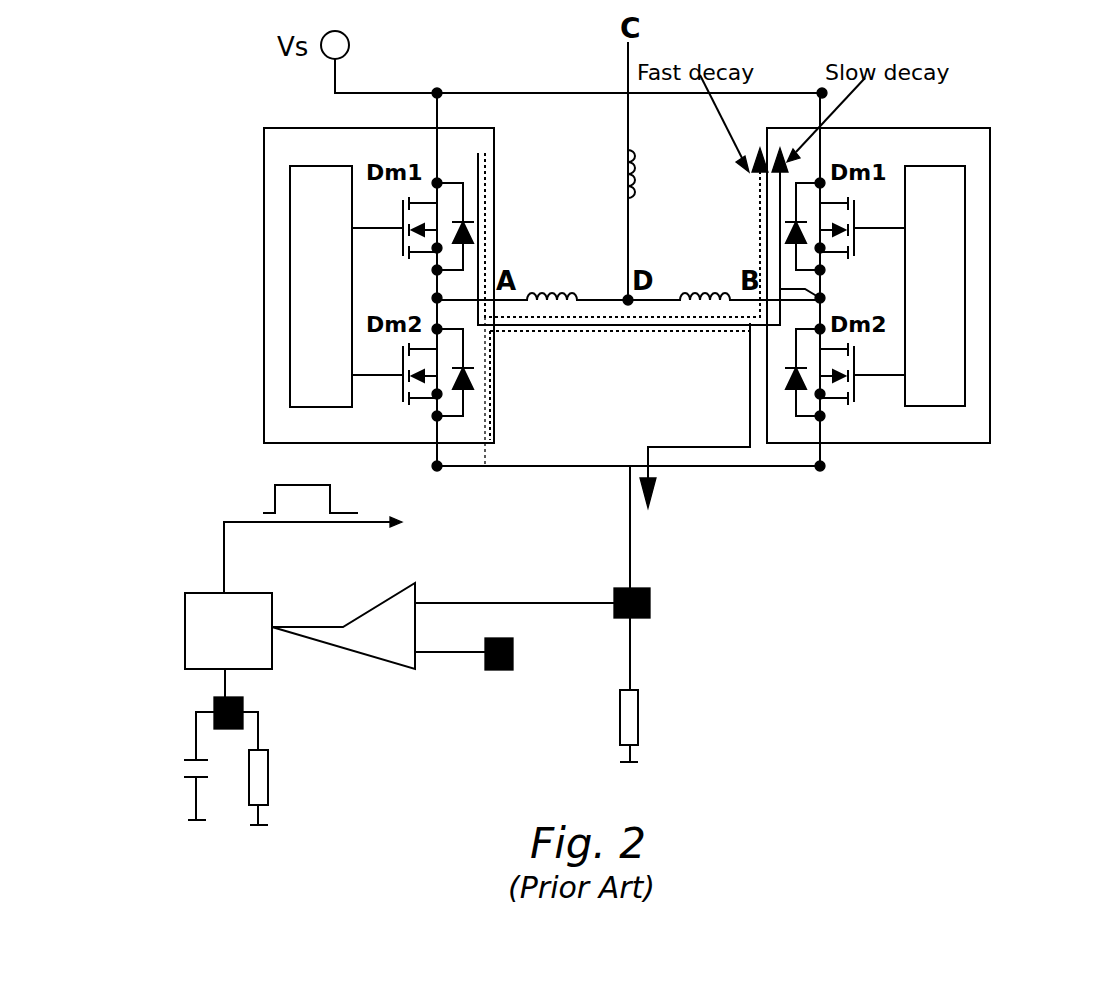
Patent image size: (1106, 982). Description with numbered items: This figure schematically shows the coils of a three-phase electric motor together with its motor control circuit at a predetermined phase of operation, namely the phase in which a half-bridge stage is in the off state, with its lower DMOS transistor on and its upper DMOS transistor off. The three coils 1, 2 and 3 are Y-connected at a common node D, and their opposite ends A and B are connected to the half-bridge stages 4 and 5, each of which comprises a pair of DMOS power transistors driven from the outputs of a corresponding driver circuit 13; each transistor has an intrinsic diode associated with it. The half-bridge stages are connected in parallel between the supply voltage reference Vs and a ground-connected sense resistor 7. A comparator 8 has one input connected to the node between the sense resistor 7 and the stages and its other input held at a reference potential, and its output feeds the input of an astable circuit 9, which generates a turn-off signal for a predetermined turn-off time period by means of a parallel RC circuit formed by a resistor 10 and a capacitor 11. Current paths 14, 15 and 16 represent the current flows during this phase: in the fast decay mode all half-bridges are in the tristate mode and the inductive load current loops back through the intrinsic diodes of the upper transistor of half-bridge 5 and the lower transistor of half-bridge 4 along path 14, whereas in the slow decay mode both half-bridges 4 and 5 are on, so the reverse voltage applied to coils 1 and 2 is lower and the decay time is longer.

The coil 1 is at (547, 292).
The coil 2 is at (709, 292).
The coil 3 is at (612, 168).
The half-bridge stage 4 is at (264, 428).
The half-bridge stage 5 is at (990, 425).
The sense resistor 7 is at (645, 718).
The comparator 8 is at (368, 616).
The astable circuit 9 is at (186, 600).
The resistor 10 is at (270, 800).
The capacitor 11 is at (181, 800).
The driver circuit 13 is at (310, 318).
The current path 14 is at (760, 215).
The current path 15 is at (822, 298).
The current path 16 is at (733, 450).